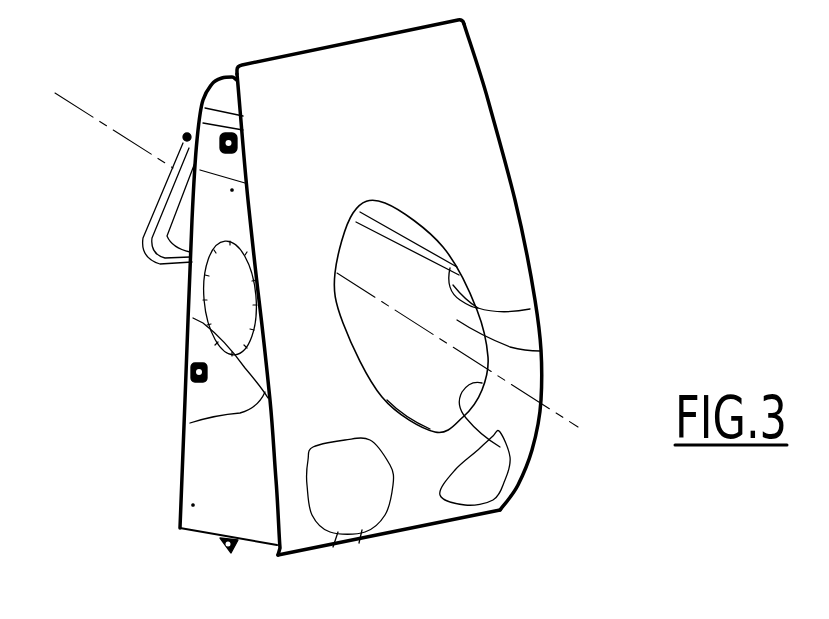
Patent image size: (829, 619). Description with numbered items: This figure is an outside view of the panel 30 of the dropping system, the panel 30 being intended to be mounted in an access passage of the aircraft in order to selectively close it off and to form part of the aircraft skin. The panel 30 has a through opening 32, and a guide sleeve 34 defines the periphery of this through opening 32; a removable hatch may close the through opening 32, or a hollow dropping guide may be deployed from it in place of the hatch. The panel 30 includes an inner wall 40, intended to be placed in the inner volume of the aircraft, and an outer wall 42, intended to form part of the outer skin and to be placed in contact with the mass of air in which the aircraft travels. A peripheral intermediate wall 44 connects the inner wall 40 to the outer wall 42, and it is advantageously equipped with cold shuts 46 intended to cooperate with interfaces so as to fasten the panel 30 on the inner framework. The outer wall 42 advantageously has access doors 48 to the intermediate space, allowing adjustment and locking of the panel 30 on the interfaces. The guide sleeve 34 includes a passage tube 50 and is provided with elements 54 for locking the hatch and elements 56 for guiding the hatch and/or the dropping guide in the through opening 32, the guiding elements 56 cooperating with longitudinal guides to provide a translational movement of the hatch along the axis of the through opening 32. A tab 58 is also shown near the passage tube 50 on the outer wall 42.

The panel 30 is at (515, 98).
The through opening 32 is at (411, 316).
The guide sleeve 34 is at (158, 272).
The inner wall 40 is at (183, 448).
The outer wall 42 is at (427, 160).
The peripheral intermediate wall 44 is at (223, 498).
The cold shut 46 is at (228, 133).
The access door 48 is at (353, 500).
The passage tube 50 is at (540, 351).
The hatch locking element 54 is at (185, 135).
The guide element 56 is at (530, 309).
The tab 58 is at (500, 447).